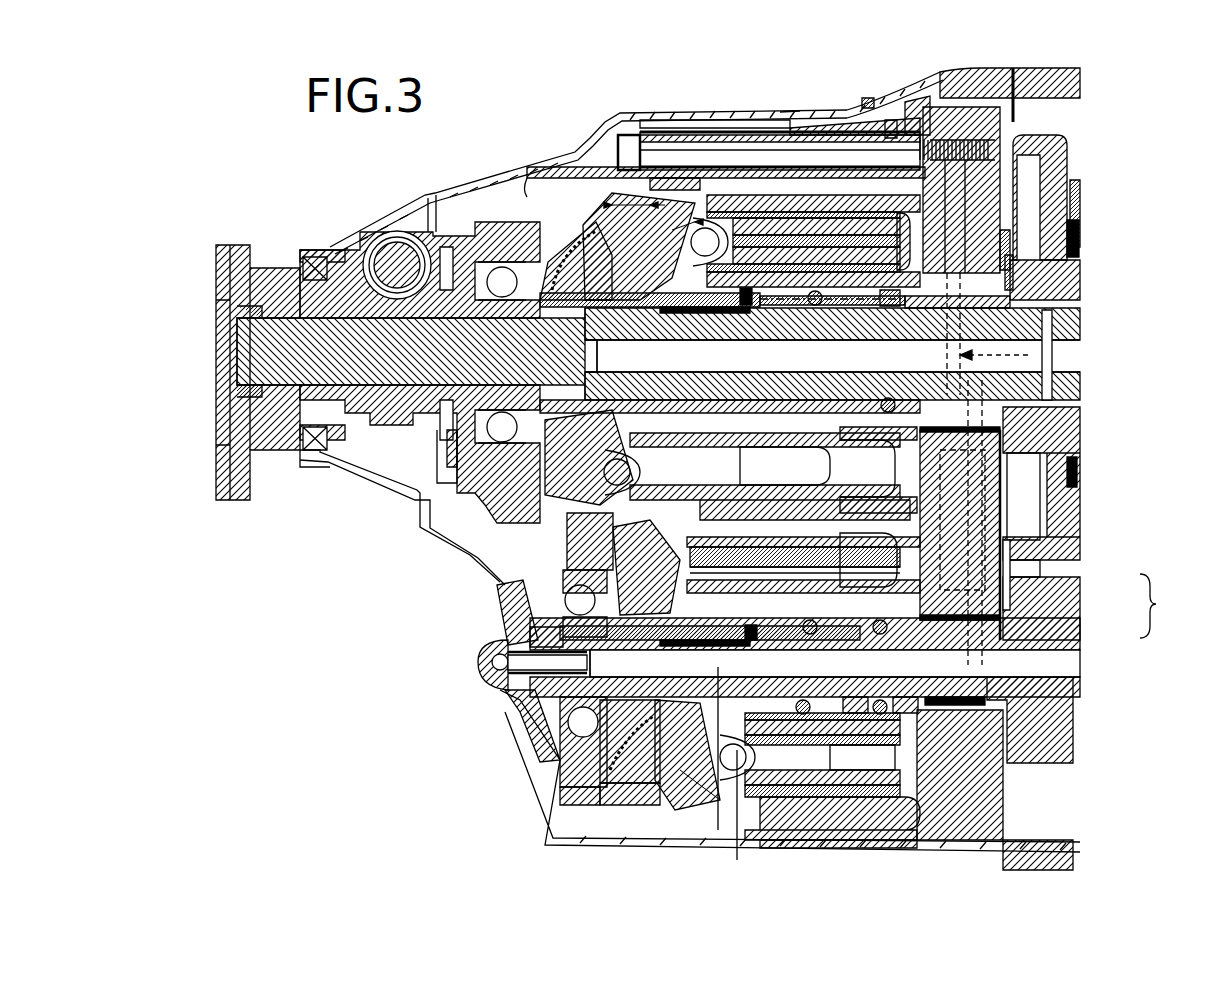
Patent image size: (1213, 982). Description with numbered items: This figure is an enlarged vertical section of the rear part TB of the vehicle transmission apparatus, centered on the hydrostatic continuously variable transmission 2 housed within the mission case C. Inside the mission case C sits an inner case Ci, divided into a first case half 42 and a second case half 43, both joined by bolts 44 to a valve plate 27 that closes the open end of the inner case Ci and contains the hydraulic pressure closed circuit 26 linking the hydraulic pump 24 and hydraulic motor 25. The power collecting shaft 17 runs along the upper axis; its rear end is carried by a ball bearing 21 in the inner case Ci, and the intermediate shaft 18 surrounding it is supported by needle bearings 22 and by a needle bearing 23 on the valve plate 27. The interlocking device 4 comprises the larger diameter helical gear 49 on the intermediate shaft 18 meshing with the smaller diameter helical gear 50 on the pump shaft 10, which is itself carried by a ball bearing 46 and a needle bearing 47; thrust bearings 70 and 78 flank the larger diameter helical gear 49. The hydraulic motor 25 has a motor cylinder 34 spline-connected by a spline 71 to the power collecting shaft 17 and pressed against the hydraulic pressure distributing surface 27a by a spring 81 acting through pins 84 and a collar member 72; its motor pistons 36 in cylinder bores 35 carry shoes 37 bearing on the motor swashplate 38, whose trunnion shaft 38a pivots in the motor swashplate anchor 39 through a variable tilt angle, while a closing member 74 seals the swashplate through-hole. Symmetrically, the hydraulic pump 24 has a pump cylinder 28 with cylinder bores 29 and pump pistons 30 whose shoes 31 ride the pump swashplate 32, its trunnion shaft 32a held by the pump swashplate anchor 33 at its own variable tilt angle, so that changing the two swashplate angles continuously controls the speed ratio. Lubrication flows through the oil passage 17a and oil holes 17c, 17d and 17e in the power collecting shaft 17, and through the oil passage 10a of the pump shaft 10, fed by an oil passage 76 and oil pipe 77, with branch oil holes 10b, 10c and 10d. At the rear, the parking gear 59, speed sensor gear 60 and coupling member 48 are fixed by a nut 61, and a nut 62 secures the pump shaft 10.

The hydrostatic continuously variable transmission 2 is at (891, 120).
The interlocking device 4 is at (1156, 606).
The pump shaft 10 is at (1066, 695).
The oil passage 10a is at (805, 548).
The oil hole 10b is at (894, 685).
The oil hole 10c is at (838, 685).
The oil hole 10d is at (615, 665).
The power collecting shaft 17 is at (1070, 318).
The oil passage 17a is at (820, 310).
The oil hole 17c is at (1048, 336).
The oil passage 17d is at (925, 310).
The oil holes 17e is at (610, 356).
The intermediate shaft 18 is at (898, 308).
The ball bearing 21 is at (503, 265).
The needle bearings 22 is at (936, 334).
The needle bearing 23 is at (1003, 243).
The hydraulic pump 24 is at (845, 812).
The hydraulic motor 25 is at (847, 128).
The hydraulic pressure closed circuit 26 is at (1004, 358).
The valve plate 27 is at (961, 190).
The hydraulic pressure distributing surface 27a is at (908, 112).
The pump cylinder 28 is at (878, 790).
The cylinder bores 29 is at (797, 785).
The pump pistons 30 is at (715, 545).
The shoes 31 is at (738, 840).
The pump swashplate 32 is at (680, 810).
The trunnion shaft 32a is at (635, 805).
The pump swashplate anchor 33 is at (590, 787).
The motor cylinder 34 is at (818, 200).
The cylinder bores 35 is at (852, 497).
The motor pistons 36 is at (735, 215).
The shoes 37 is at (688, 178).
The motor swashplate 38 is at (615, 185).
The trunnion shaft 38a is at (598, 252).
The motor swashplate anchor 39 is at (548, 192).
The first case half 42 is at (700, 120).
The second case half 43 is at (870, 98).
The bolts 44 is at (633, 135).
The ball bearing 46 is at (560, 588).
The needle bearing 47 is at (940, 697).
The coupling member 48 is at (290, 262).
The larger diameter helical gear 49 is at (1060, 560).
The smaller diameter helical gear 50 is at (1060, 600).
The parking gear 59 is at (447, 483).
The speed sensor gear 60 is at (397, 413).
The nut 61 is at (243, 395).
The nut 62 is at (565, 738).
The thrust bearing 70 is at (1080, 238).
The spline 71 is at (672, 645).
The collar member 72 is at (555, 308).
The closing member 74 is at (630, 862).
The oil passage 76 is at (486, 655).
The oil pipe 77 is at (515, 699).
The thrust bearing 78 is at (1010, 290).
The spring 81 is at (770, 641).
The pins 84 is at (740, 641).
The mission case C is at (1060, 92).
The inner case Ci is at (790, 110).
The part of the transmission apparatus TB is at (1092, 182).